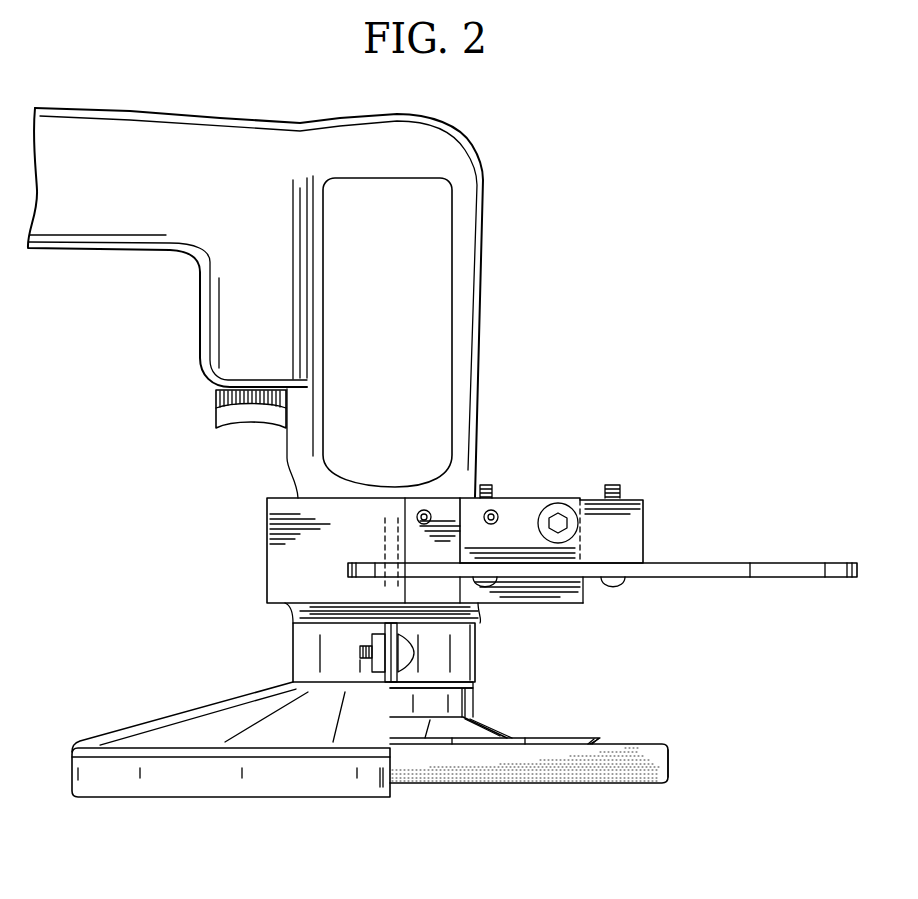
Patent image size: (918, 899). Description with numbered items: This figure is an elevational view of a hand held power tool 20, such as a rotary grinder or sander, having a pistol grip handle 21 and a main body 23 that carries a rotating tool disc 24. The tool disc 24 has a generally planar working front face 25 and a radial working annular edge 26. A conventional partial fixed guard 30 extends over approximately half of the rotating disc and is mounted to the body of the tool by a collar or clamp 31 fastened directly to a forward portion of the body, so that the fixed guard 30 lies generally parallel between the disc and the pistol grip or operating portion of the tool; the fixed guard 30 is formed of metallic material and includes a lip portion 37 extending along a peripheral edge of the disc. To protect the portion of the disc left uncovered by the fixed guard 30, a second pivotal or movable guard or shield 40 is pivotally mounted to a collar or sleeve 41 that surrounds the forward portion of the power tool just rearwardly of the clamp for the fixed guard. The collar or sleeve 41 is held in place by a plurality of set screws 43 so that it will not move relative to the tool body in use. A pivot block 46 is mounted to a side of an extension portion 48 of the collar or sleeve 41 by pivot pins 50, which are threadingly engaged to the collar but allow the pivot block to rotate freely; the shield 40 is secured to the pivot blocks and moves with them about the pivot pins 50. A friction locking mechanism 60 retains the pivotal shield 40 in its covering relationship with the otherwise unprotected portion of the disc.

The power tool 20 is at (190, 398).
The pistol grip handle 21 is at (132, 128).
The main body 23 is at (436, 283).
The rotating tool disc 24 is at (664, 739).
The planar working front face 25 is at (470, 785).
The radial working annular edge 26 is at (670, 765).
The partial fixed guard 30 is at (180, 713).
The collar or clamp 31 is at (308, 665).
The lip portion 37 is at (216, 797).
The pivotal or movable guard or shield 40 is at (794, 577).
The collar or sleeve 41 is at (278, 571).
The set screws 43 is at (418, 518).
The pivot block 46 is at (634, 536).
The extension portion 48 is at (584, 597).
The pivot pins 50 is at (556, 509).
The friction locking mechanism 60 is at (494, 513).